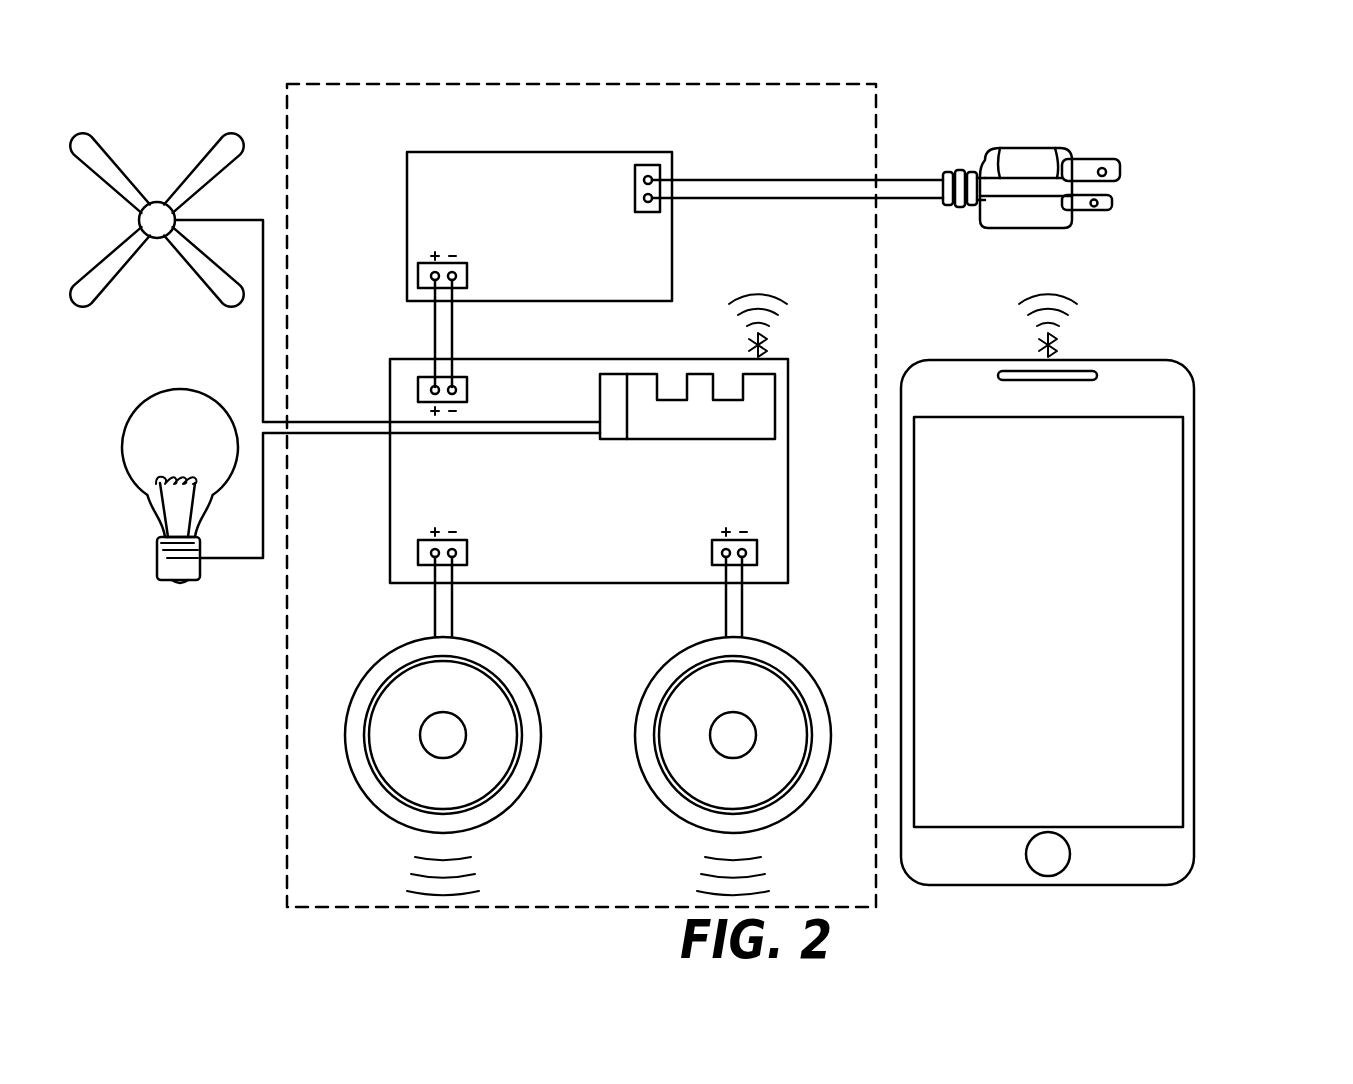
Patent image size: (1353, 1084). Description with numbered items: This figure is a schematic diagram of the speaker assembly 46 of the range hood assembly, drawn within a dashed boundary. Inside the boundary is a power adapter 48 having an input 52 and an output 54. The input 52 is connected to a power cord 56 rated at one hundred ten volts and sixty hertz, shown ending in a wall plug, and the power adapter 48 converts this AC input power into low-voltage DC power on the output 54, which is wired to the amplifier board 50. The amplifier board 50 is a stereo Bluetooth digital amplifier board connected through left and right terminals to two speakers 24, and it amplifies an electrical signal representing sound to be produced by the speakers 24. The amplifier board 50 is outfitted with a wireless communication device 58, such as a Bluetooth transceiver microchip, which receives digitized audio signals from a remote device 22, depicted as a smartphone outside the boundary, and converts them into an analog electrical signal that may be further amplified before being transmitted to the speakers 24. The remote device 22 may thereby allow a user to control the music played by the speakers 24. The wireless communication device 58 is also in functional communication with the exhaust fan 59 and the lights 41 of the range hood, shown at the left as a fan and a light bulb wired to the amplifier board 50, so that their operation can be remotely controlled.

The remote device 22 is at (1199, 448).
The speakers 24 is at (418, 782).
The lights 41 is at (188, 394).
The speaker assembly 46 is at (861, 85).
The power adapter 48 is at (548, 152).
The amplifier board 50 is at (410, 494).
The input 52 is at (643, 165).
The output 54 is at (419, 277).
The power cord 56 is at (777, 186).
The wireless communication device 58 is at (757, 423).
The exhaust fan 59 is at (157, 203).